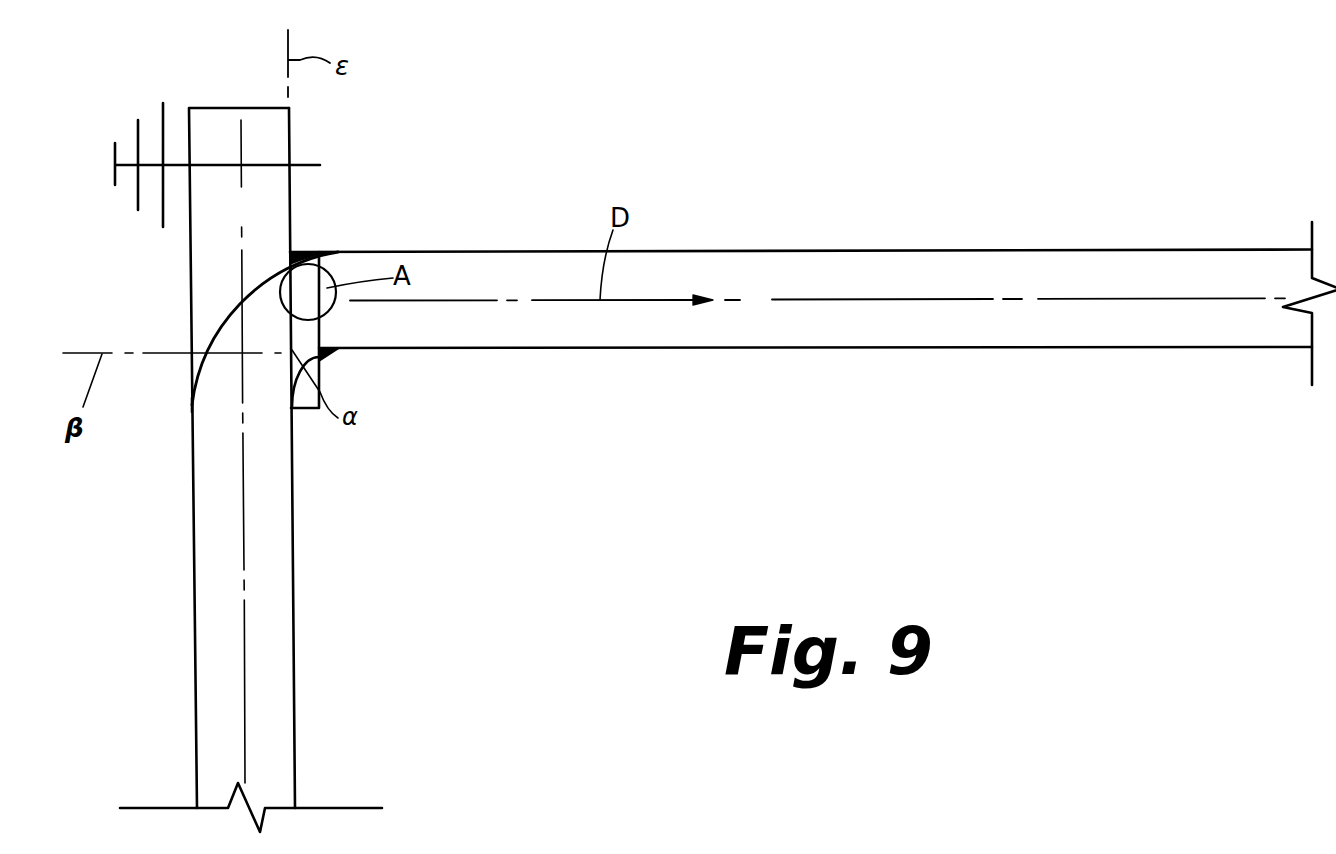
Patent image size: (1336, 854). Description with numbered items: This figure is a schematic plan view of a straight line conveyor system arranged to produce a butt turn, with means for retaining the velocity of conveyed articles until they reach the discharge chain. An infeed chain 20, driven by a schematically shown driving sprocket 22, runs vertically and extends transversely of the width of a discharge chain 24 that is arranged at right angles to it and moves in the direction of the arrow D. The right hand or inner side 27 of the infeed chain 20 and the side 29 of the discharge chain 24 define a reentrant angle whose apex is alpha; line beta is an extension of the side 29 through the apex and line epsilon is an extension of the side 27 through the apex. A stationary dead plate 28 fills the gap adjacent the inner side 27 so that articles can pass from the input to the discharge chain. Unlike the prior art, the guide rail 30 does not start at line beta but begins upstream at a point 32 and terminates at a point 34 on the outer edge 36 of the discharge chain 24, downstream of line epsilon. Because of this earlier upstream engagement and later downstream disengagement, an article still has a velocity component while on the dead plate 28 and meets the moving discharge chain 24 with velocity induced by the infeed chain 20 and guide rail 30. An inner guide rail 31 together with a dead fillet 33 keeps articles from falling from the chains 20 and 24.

The infeed chain 20 is at (272, 612).
The driving sprocket 22 is at (117, 120).
The discharge chain 24 is at (828, 335).
The inner side of the input chain 27 is at (295, 573).
The dead plate 28 is at (309, 403).
The side of the discharge chain 29 is at (735, 349).
The guide rail 30 is at (220, 327).
The inner guide rail 31 is at (321, 378).
The starting point of the guide rail 32 is at (191, 404).
The dead fillet 33 is at (323, 357).
The terminating point of the guide rail 34 is at (348, 252).
The outer edge of the discharge chain 36 is at (778, 251).